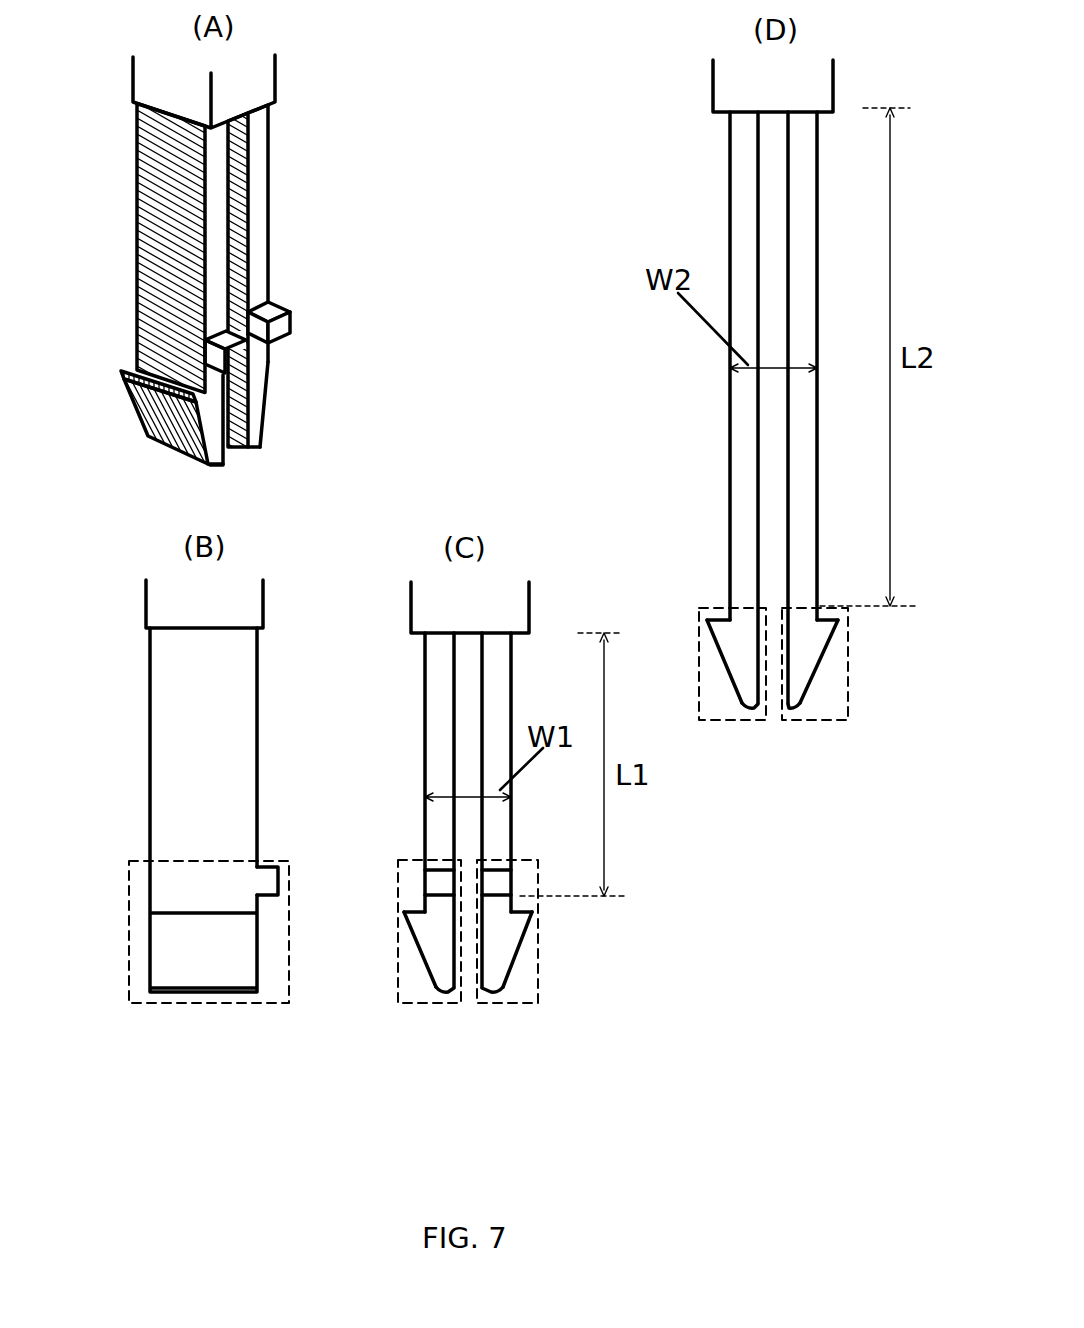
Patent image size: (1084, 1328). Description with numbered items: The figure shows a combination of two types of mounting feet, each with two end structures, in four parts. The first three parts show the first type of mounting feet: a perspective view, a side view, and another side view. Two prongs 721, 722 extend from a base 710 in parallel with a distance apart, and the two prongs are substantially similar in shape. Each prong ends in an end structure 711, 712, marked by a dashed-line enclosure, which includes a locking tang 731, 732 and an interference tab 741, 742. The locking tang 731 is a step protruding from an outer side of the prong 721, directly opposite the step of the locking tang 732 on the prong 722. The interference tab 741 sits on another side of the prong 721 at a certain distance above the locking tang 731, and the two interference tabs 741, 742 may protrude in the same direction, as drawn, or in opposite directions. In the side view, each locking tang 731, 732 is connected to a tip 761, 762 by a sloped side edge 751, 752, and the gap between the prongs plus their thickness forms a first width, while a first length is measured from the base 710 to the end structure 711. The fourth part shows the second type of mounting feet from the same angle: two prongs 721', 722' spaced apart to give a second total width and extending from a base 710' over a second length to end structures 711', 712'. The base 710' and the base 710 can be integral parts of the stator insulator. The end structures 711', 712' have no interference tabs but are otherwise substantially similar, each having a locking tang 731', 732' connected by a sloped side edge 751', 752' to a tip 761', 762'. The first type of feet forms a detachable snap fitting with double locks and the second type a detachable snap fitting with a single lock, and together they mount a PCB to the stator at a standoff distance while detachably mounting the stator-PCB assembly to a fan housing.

The base 710 is at (331, 344).
The prong 721 is at (249, 527).
The prong 722 is at (405, 543).
The locking tang 731 is at (242, 606).
The locking tang 732 is at (455, 635).
The interference tab 741 is at (212, 335).
The interference tab 742 is at (287, 310).
The sloped side edge 751 is at (383, 949).
The sloped side edge 752 is at (575, 960).
The tip 761 is at (427, 1043).
The tip 762 is at (509, 1043).
The end structure 711 is at (252, 956).
The end structure 712 is at (540, 957).
The base 710' is at (773, 86).
The prong 721' is at (699, 407).
The prong 722' is at (839, 407).
The locking tang 731' is at (685, 590).
The locking tang 732' is at (891, 647).
The sloped side edge 751' is at (686, 661).
The sloped side edge 752' is at (877, 674).
The tip 761' is at (743, 780).
The tip 762' is at (814, 758).
The end structure 711' is at (714, 705).
The end structure 712' is at (866, 714).